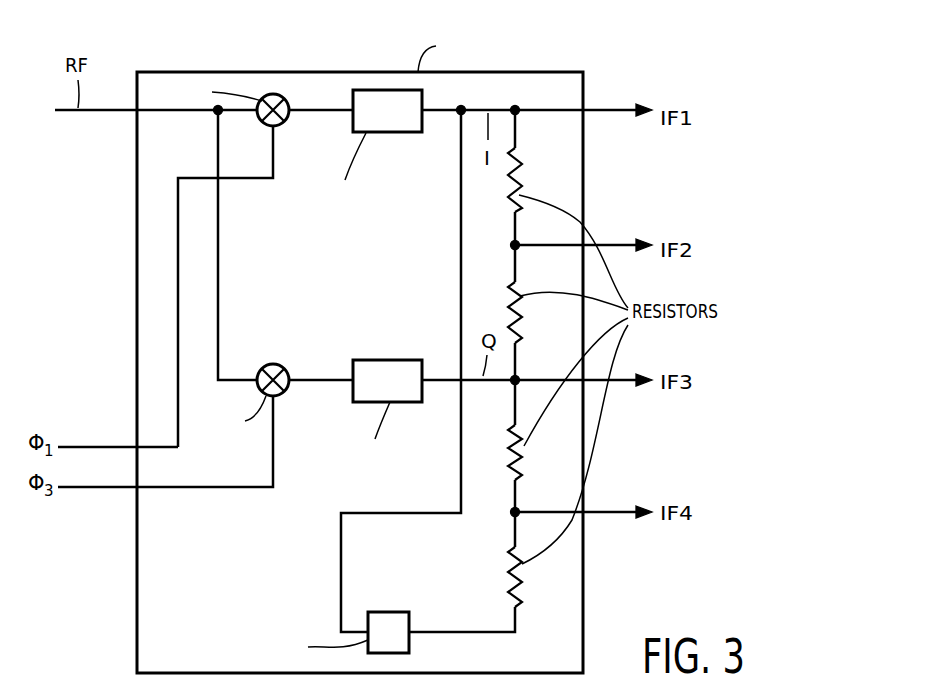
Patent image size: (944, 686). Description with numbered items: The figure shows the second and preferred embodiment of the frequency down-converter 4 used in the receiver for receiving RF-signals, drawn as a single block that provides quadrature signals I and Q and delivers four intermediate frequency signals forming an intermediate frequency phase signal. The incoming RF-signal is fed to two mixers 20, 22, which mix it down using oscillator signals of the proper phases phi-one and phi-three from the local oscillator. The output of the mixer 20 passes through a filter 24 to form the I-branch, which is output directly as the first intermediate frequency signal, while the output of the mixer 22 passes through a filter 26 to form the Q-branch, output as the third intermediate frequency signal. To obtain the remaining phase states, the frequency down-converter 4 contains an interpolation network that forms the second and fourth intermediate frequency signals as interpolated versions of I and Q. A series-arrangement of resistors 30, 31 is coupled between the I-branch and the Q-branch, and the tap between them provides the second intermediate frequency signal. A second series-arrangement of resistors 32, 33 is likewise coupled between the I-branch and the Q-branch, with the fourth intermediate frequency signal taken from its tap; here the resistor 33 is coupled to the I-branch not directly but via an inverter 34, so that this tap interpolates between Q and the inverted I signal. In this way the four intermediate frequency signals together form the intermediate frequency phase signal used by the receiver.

The frequency down-converter 4 is at (586, 82).
The mixer 20 is at (284, 121).
The mixer 22 is at (273, 364).
The filter 24 is at (386, 133).
The filter 26 is at (381, 360).
The resistor 30 is at (525, 183).
The resistor 31 is at (525, 317).
The resistor 32 is at (525, 450).
The resistor 33 is at (525, 578).
The inverter 34 is at (388, 610).